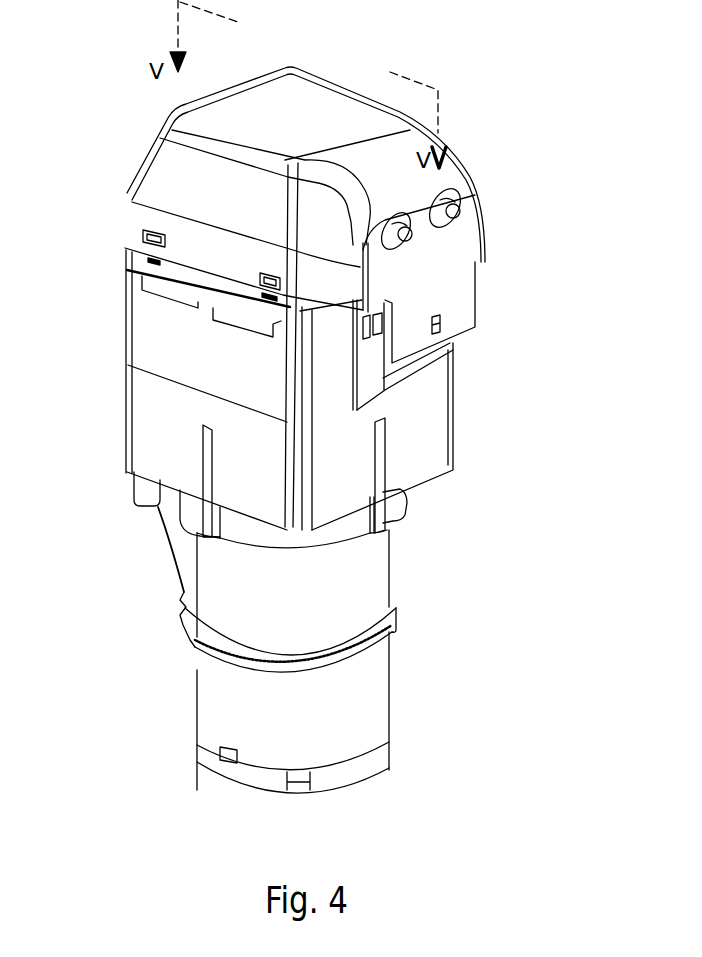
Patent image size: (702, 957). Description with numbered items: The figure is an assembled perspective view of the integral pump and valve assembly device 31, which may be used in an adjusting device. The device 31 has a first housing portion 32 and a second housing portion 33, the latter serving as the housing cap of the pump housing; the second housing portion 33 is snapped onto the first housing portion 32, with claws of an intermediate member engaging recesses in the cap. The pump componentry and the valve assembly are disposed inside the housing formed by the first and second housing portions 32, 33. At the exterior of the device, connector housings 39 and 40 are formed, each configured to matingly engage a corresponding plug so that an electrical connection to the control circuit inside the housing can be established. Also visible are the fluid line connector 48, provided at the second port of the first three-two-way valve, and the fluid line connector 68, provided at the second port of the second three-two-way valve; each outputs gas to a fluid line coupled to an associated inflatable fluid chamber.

The integral pump and valve assembly device 31 is at (477, 118).
The first housing portion 32 is at (125, 338).
The second housing portion 33 is at (125, 222).
The connector housing 39 is at (476, 305).
The connector housing 40 is at (387, 398).
The fluid line connector 48 is at (412, 237).
The fluid line connector 68 is at (459, 210).